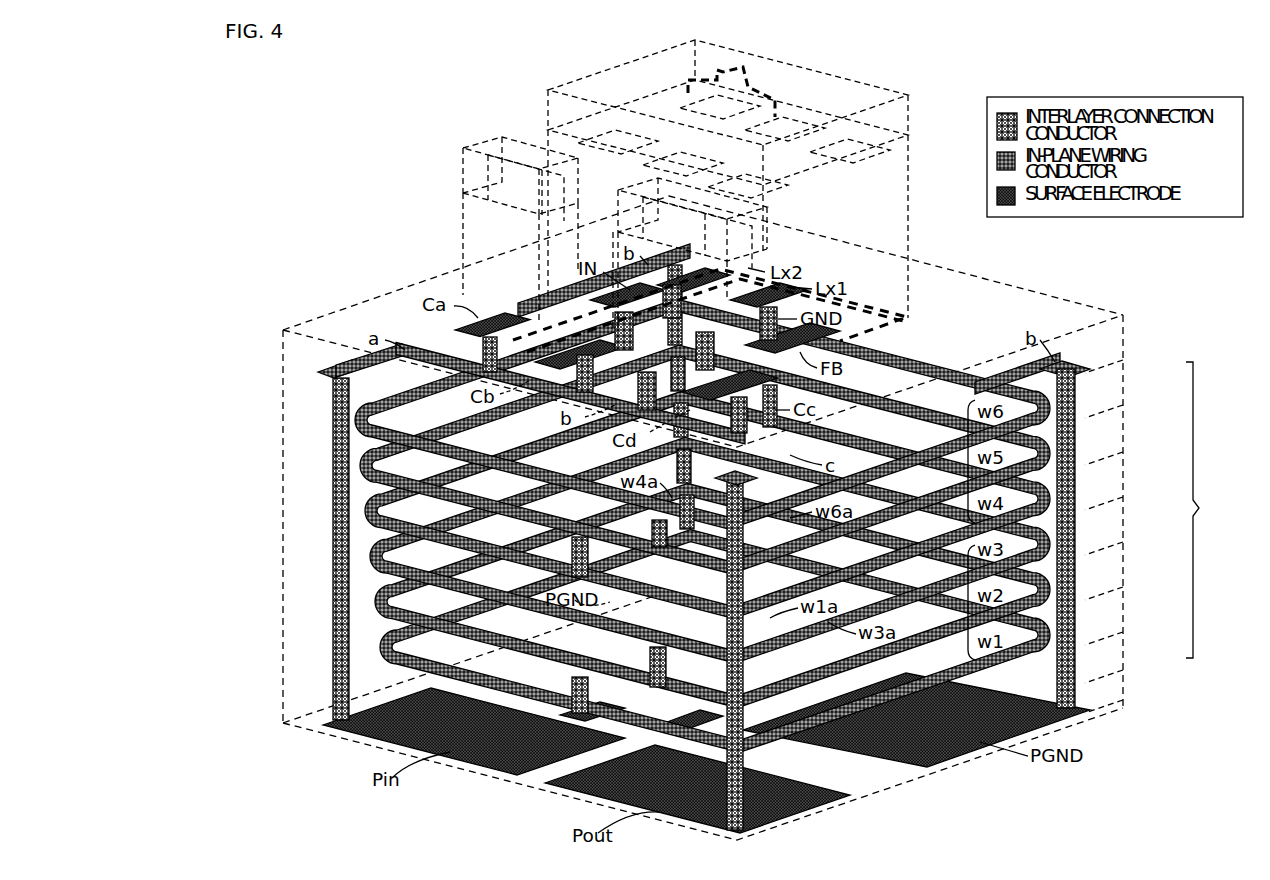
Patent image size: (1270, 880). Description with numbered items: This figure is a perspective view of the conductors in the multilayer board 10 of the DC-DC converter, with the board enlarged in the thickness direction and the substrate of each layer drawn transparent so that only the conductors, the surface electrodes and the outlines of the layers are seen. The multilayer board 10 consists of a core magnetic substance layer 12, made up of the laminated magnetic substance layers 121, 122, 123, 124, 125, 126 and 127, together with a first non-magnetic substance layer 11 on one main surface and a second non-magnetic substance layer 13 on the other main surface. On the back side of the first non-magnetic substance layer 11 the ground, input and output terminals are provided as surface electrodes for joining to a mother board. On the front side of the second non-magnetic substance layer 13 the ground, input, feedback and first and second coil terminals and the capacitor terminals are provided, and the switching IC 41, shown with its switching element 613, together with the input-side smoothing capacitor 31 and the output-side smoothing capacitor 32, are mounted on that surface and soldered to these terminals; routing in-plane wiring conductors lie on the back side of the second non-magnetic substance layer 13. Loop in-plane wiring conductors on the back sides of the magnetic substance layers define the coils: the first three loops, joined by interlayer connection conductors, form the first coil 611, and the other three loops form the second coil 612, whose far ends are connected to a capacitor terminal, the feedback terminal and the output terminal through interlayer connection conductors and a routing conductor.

The multilayer board 10 is at (376, 296).
The first non-magnetic substance layer 11 is at (1113, 691).
The core magnetic substance layer 12 is at (1207, 510).
The second non-magnetic substance layer 13 is at (1113, 336).
The magnetic substance layer 121 is at (1113, 649).
The magnetic substance layer 122 is at (1113, 603).
The magnetic substance layer 123 is at (1113, 558).
The magnetic substance layer 124 is at (1113, 513).
The magnetic substance layer 125 is at (1113, 468).
The magnetic substance layer 126 is at (1113, 423).
The magnetic substance layer 127 is at (1113, 379).
The input-side smoothing capacitor 31 is at (498, 142).
The output-side smoothing capacitor 32 is at (660, 182).
The switching IC 41 is at (635, 66).
The first coil 611 is at (955, 592).
The second coil 612 is at (955, 452).
The switching element 613 is at (736, 78).